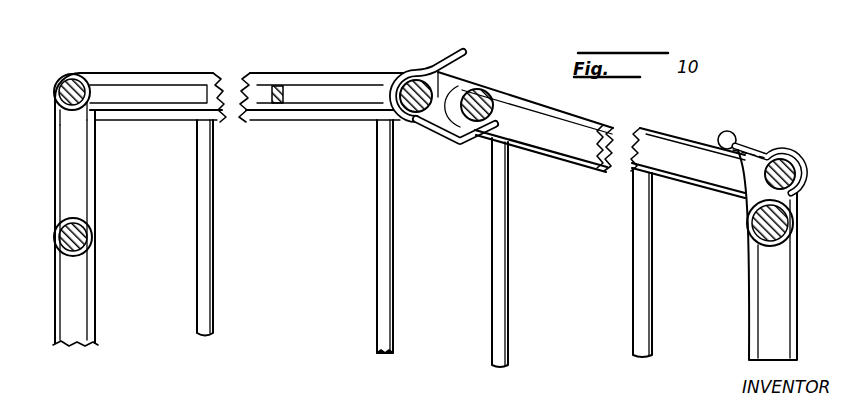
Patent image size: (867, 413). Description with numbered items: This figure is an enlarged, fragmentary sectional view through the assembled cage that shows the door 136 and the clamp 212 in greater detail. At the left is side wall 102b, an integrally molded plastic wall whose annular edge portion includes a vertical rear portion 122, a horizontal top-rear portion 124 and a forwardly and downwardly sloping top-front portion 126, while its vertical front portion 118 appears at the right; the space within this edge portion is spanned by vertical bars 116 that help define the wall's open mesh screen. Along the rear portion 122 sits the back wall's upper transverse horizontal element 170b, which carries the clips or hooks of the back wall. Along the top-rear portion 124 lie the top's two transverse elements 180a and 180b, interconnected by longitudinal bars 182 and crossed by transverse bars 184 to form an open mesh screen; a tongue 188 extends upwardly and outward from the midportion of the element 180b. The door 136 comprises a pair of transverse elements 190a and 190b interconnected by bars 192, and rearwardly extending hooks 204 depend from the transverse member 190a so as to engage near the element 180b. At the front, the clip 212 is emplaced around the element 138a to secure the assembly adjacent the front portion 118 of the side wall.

The wall member 102b is at (67, 350).
The vertical bars 116 is at (217, 233).
The vertical front portion 118 is at (773, 300).
The vertical rear portion 122 is at (75, 197).
The horizontal top-rear portion 124 is at (220, 83).
The top-front portion 126 is at (607, 127).
The door 136 is at (550, 156).
The element 138a is at (790, 233).
The transverse horizontal element 170b is at (95, 243).
The transverse element 180a is at (74, 82).
The transverse element 180b is at (422, 66).
The longitudinal bars 182 is at (132, 93).
The transverse bars 184 is at (284, 90).
The tongue 188 is at (439, 60).
The transverse element 190a is at (482, 94).
The transverse element 190b is at (790, 165).
The bars 192 is at (547, 136).
The hooks 204 is at (428, 137).
The clip 212 is at (783, 152).